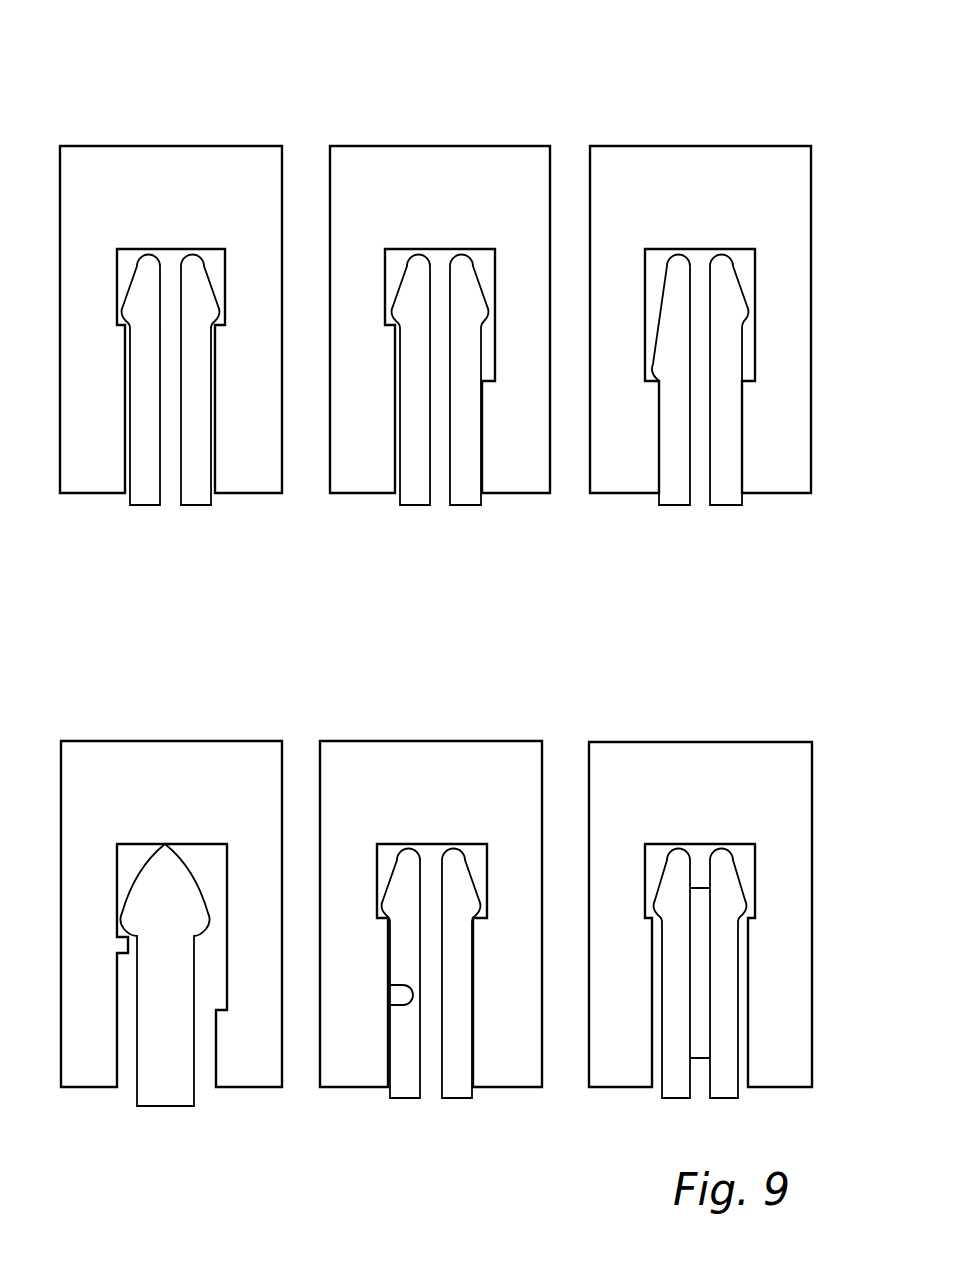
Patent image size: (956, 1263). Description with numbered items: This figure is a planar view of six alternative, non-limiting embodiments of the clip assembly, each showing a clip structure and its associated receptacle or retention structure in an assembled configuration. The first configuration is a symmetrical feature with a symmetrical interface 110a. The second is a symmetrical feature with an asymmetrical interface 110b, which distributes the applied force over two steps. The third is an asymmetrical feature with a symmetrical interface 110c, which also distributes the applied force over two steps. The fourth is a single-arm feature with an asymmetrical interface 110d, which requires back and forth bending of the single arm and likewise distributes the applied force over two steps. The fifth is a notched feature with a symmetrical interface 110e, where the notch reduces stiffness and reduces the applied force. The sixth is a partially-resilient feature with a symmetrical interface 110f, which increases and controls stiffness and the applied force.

The symmetrical feature with a symmetrical interface 110a is at (190, 92).
The symmetrical feature with an asymmetrical interface 110b is at (435, 92).
The asymmetrical feature with a symmetrical interface 110c is at (703, 92).
The single-arm feature with an asymmetrical interface 110d is at (190, 712).
The notched feature with a symmetrical interface 110e is at (435, 712).
The partially-resilient feature with a symmetrical interface 110f is at (703, 712).